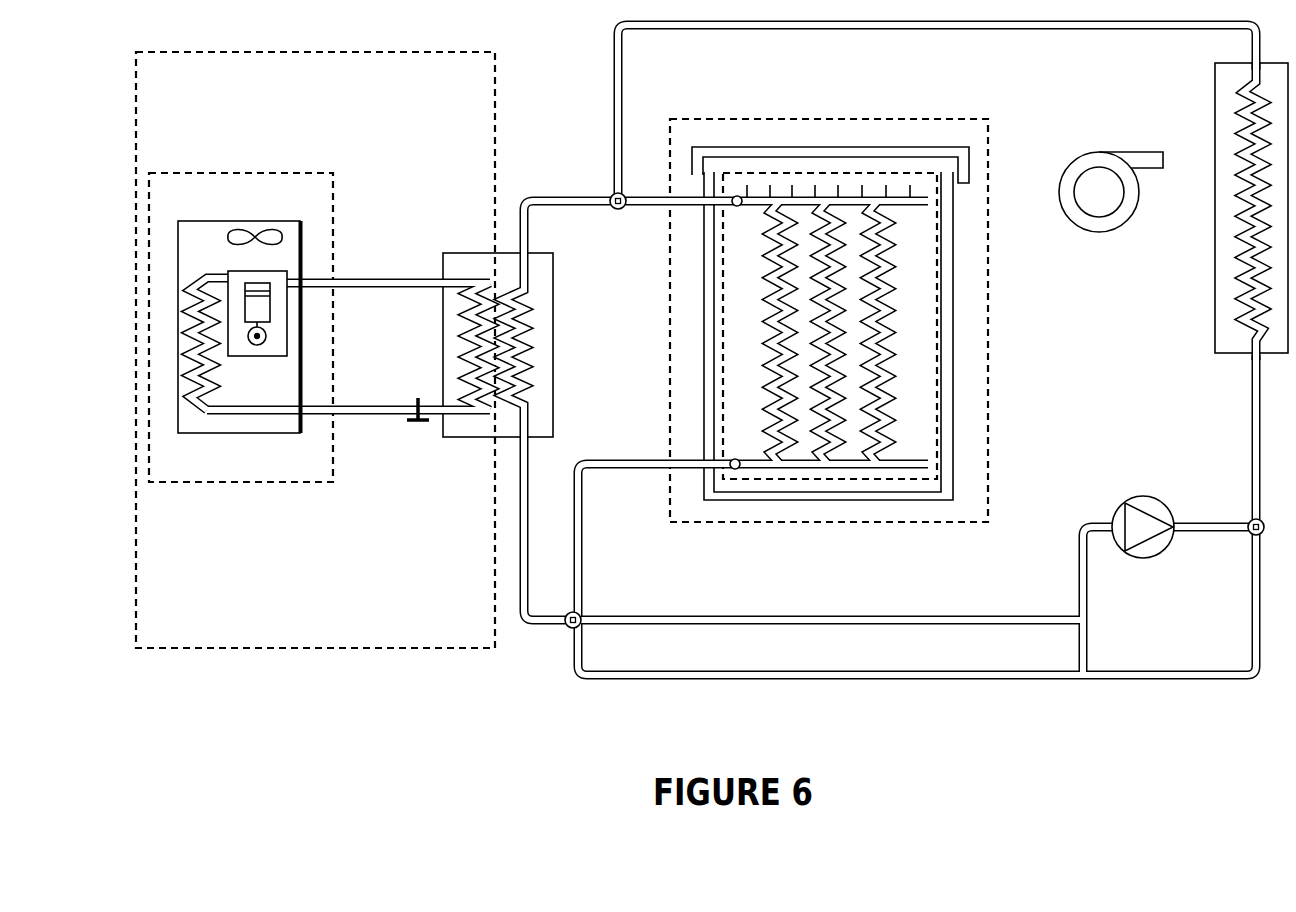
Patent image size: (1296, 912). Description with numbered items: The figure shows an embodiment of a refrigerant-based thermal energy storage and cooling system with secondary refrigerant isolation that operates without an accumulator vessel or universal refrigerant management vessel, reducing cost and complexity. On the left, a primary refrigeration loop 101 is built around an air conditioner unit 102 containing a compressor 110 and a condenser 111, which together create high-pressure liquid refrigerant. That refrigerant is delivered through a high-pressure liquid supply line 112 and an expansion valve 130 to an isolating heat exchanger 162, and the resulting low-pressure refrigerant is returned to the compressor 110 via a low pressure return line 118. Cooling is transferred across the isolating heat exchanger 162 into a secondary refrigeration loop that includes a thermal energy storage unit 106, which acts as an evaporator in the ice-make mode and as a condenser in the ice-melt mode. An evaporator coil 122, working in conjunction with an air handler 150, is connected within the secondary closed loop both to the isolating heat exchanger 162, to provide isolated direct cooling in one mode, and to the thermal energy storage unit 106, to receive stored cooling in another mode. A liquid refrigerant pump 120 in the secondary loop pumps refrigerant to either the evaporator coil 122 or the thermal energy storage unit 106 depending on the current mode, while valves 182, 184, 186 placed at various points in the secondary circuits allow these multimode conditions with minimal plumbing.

The primary refrigeration loop 101 is at (138, 52).
The air conditioner unit 102 is at (297, 482).
The thermal energy storage unit 106 is at (722, 522).
The compressor 110 is at (288, 272).
The condenser 111 is at (185, 377).
The high-pressure liquid supply line 112 is at (380, 415).
The low pressure return line 118 is at (388, 280).
The liquid refrigerant pump 120 is at (1167, 500).
The evaporator coil 122 is at (1215, 90).
The expansion valve 130 is at (410, 400).
The air handler 150 is at (1099, 232).
The isolating heat exchanger 162 is at (470, 253).
The valve 182 is at (618, 210).
The valve 184 is at (580, 627).
The valve 186 is at (1247, 535).